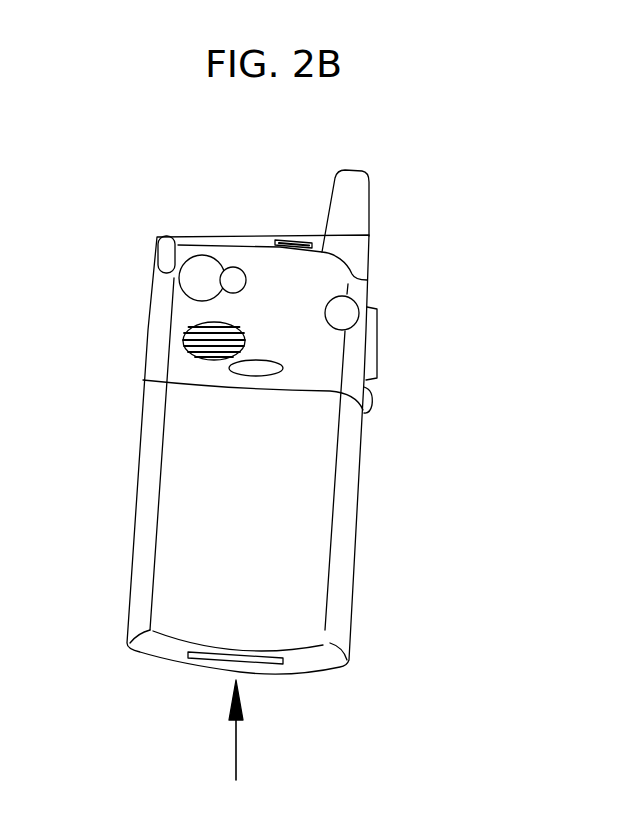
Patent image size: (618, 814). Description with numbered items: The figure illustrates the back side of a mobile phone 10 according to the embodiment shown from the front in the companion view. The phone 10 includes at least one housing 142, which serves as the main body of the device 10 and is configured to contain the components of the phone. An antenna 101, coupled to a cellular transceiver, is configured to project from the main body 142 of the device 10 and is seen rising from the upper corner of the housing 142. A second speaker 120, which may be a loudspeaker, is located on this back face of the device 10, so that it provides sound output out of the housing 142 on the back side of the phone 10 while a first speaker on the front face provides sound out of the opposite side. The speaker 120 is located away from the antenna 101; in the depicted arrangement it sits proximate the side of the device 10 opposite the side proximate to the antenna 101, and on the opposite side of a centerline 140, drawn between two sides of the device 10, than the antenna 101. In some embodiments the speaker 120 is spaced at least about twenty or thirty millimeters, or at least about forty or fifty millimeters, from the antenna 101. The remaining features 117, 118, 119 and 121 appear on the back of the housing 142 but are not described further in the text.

The mobile phone 10 is at (102, 600).
The antenna 101 is at (375, 222).
The flash 117 is at (174, 222).
The camera lens 118 is at (228, 245).
The slide switch 119 is at (296, 231).
The second speaker 120 is at (178, 344).
The back cover 121 is at (267, 494).
The housing 142 is at (128, 463).
The centerline 140 is at (249, 738).